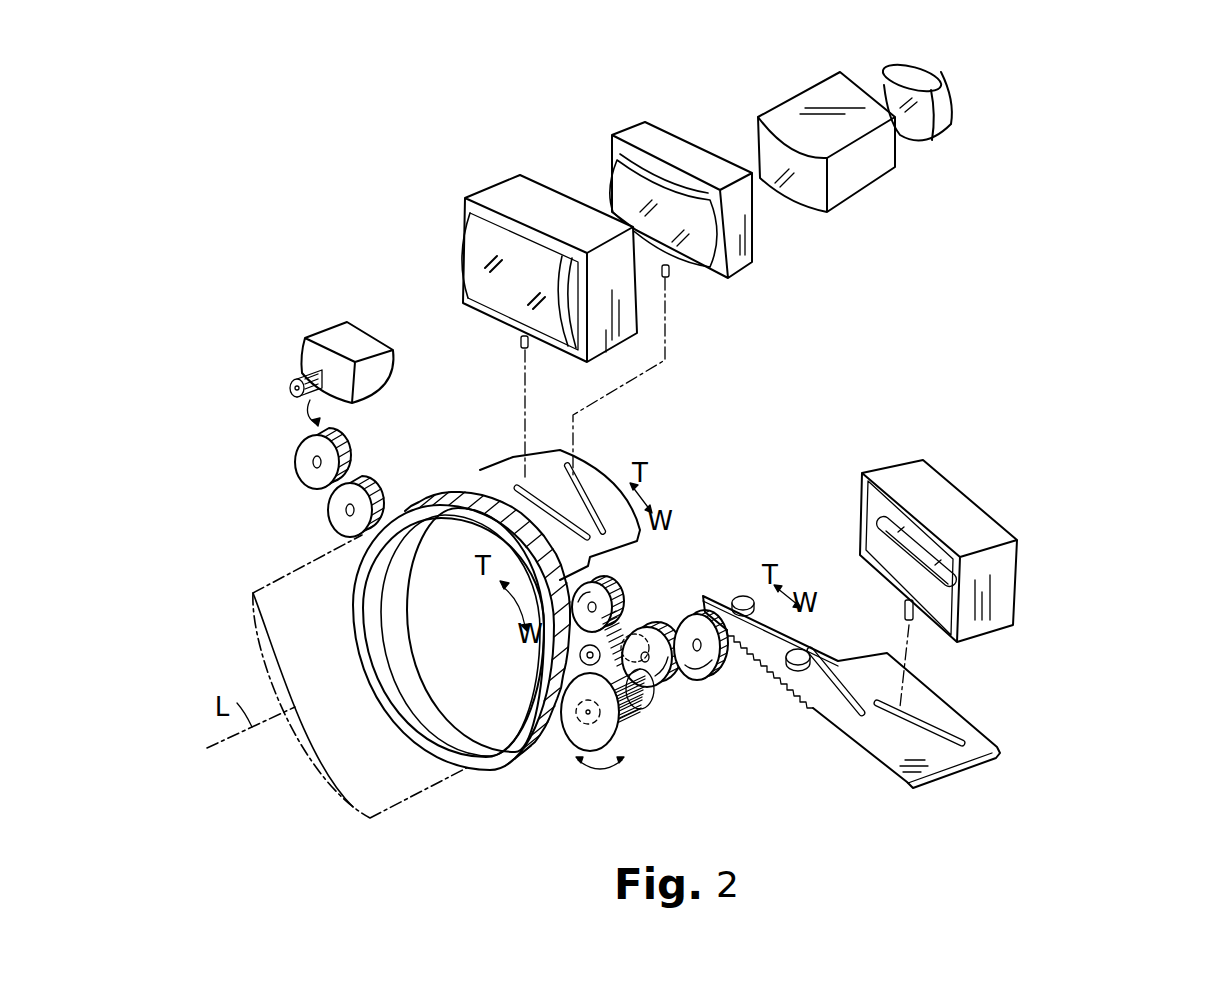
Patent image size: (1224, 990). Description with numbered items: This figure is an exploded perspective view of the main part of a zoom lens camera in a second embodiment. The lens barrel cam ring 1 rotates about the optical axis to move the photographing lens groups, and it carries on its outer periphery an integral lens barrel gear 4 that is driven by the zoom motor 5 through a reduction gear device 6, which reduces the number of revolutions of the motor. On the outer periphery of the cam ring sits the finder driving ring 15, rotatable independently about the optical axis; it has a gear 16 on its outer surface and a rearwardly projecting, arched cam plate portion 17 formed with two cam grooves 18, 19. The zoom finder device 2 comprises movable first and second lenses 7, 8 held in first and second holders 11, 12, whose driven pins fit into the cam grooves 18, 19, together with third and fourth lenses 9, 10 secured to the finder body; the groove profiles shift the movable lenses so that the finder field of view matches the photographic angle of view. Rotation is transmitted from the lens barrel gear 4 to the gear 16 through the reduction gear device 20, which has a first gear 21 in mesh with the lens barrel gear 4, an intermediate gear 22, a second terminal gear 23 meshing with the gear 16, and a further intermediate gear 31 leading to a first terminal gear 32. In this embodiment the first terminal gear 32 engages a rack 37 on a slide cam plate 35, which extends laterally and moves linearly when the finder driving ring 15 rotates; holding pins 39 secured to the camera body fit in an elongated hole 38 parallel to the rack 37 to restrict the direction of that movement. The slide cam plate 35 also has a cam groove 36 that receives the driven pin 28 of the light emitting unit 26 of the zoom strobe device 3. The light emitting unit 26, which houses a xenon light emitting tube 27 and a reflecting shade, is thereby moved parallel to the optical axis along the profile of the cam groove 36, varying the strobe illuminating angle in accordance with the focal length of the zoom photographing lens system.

The lens barrel cam ring 1 is at (348, 782).
The zoom finder device 2 is at (552, 150).
The zoom strobe device 3 is at (977, 477).
The lens barrel gear 4 is at (512, 765).
The zoom motor 5 is at (357, 336).
The reduction gear device 6 is at (373, 474).
The first lens 7 is at (466, 264).
The second lens 8 is at (622, 190).
The third lens 9 is at (822, 92).
The fourth lens 10 is at (912, 70).
The first holder 11 is at (512, 195).
The second holder 12 is at (683, 145).
The finder driving ring 15 is at (475, 482).
The gear 16 is at (553, 777).
The cam plate portion 17 is at (548, 460).
The cam groove 18 is at (508, 460).
The cam groove 19 is at (578, 478).
The reduction gear device 20 is at (612, 778).
The first gear 21 is at (560, 700).
The intermediate gear 22 is at (628, 620).
The second terminal gear 23 is at (606, 596).
The light emitting unit 26 is at (988, 530).
The light emitting tube 27 is at (877, 517).
The driven pin 28 is at (914, 622).
The intermediate gear 31 is at (660, 694).
The first terminal gear 32 is at (705, 688).
The slide cam plate 35 is at (874, 742).
The cam groove 36 is at (932, 722).
The rack 37 is at (790, 707).
The elongated hole 38 is at (792, 650).
The holding pins 39 is at (745, 596).